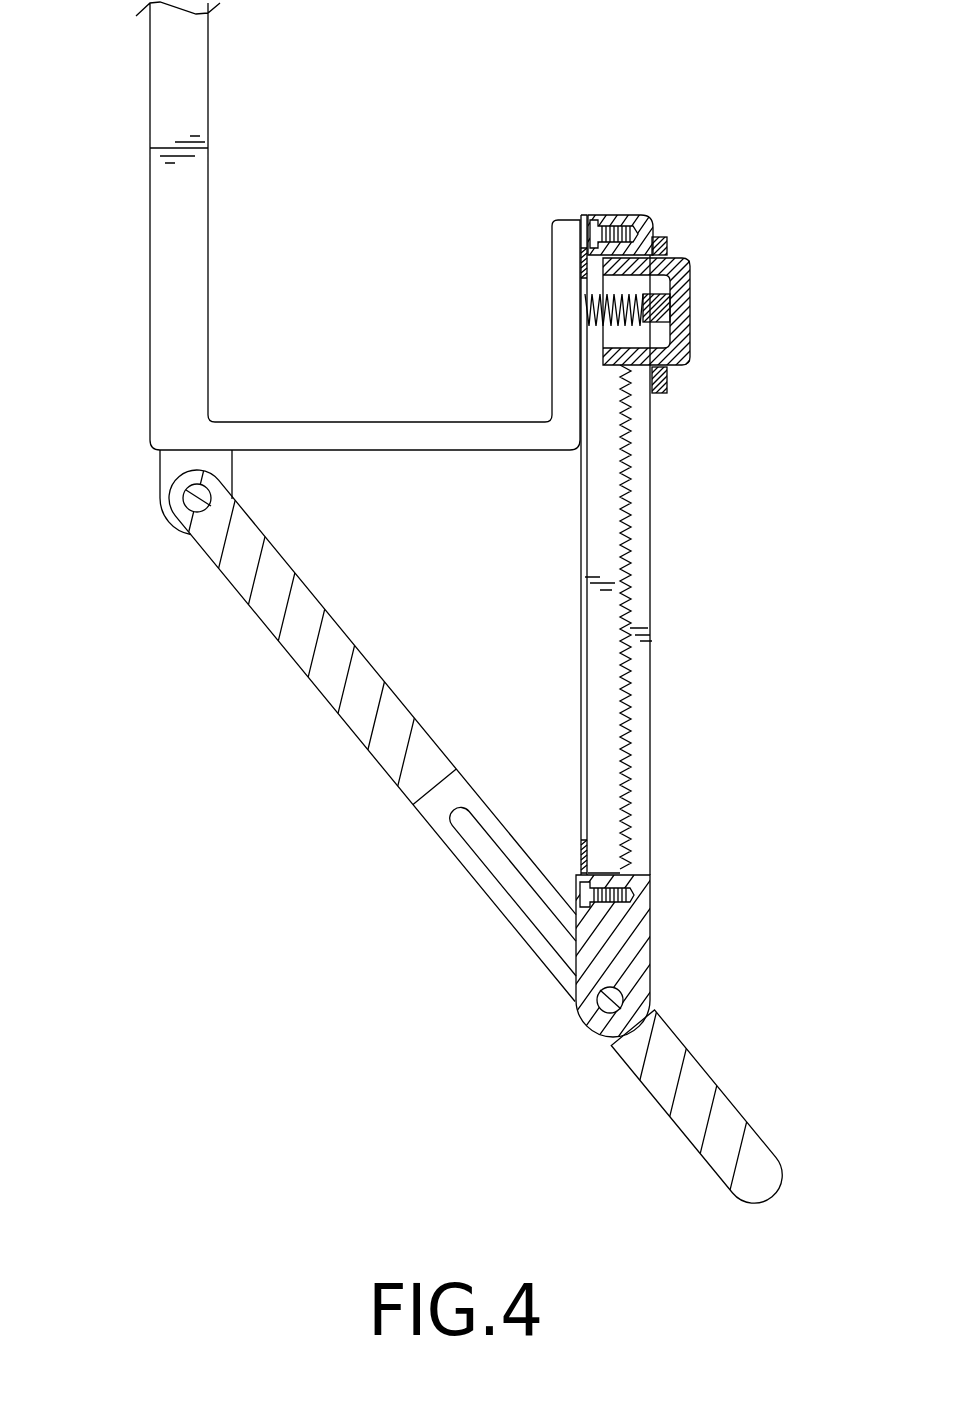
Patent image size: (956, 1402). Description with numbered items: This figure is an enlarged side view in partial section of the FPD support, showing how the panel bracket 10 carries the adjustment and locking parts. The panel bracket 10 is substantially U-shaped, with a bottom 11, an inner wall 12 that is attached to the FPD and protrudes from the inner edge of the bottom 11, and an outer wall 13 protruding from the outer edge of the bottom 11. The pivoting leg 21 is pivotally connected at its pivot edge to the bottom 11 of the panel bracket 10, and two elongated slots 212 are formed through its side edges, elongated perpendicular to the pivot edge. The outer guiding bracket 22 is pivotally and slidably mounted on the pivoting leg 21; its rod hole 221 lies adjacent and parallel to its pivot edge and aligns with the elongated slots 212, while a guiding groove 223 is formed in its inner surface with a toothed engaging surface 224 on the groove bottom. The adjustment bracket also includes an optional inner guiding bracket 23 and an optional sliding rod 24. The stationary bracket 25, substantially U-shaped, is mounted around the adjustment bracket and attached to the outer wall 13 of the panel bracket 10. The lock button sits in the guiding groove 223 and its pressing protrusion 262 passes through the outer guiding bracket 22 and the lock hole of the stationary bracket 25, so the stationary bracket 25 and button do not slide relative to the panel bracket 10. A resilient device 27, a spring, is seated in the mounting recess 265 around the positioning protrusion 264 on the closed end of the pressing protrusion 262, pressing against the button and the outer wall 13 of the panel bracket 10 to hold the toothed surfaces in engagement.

The panel bracket 10 is at (306, 268).
The bottom 11 is at (358, 445).
The inner wall 12 is at (168, 238).
The outer wall 13 is at (567, 268).
The pivoting leg 21 is at (388, 730).
The elongated slot 212 is at (500, 858).
The outer guiding bracket 22 is at (637, 945).
The rod hole 221 is at (622, 999).
The guiding groove 223 is at (602, 723).
The engaging surface 224 is at (625, 507).
The inner guiding bracket 23 is at (578, 592).
The sliding rod 24 is at (605, 1003).
The stationary bracket 25 is at (667, 380).
The pressing protrusion 262 is at (680, 310).
The positioning protrusion 264 is at (655, 330).
The mounting recess 265 is at (620, 338).
The resilient device 27 is at (607, 293).